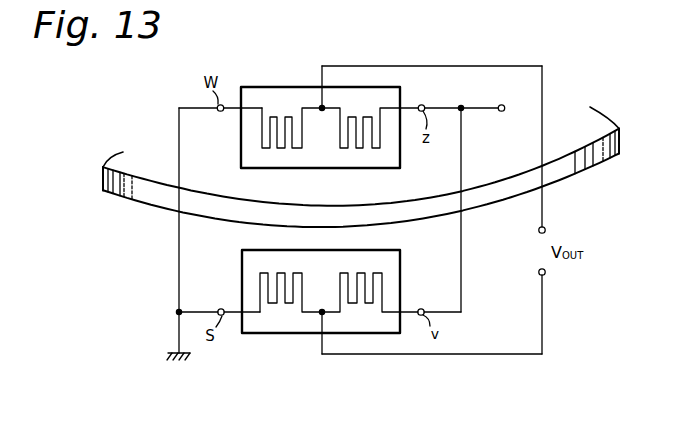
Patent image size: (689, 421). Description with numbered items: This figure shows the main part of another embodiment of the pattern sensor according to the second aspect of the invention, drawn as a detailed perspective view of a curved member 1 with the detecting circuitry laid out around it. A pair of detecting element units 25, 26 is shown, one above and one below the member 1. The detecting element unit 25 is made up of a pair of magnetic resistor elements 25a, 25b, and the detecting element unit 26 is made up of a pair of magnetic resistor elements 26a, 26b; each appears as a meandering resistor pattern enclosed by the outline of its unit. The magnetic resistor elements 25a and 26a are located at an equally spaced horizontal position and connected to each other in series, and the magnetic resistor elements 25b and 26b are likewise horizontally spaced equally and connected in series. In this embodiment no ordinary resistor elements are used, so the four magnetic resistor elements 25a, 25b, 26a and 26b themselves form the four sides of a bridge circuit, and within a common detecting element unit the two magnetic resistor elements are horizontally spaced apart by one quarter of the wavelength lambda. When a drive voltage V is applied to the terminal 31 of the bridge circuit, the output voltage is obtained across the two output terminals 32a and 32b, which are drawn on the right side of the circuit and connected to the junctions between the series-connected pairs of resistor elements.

The flexible member (beam) 1 is at (148, 195).
The detecting element unit 25 is at (342, 100).
The magnetic resistor element 25a is at (277, 120).
The magnetic resistor element 25b is at (360, 117).
The detecting element unit 26 is at (318, 318).
The magnetic resistor element 26a is at (273, 303).
The magnetic resistor element 26b is at (352, 303).
The terminal 31 is at (502, 112).
The output terminal 32a is at (546, 229).
The output terminal 32b is at (546, 273).